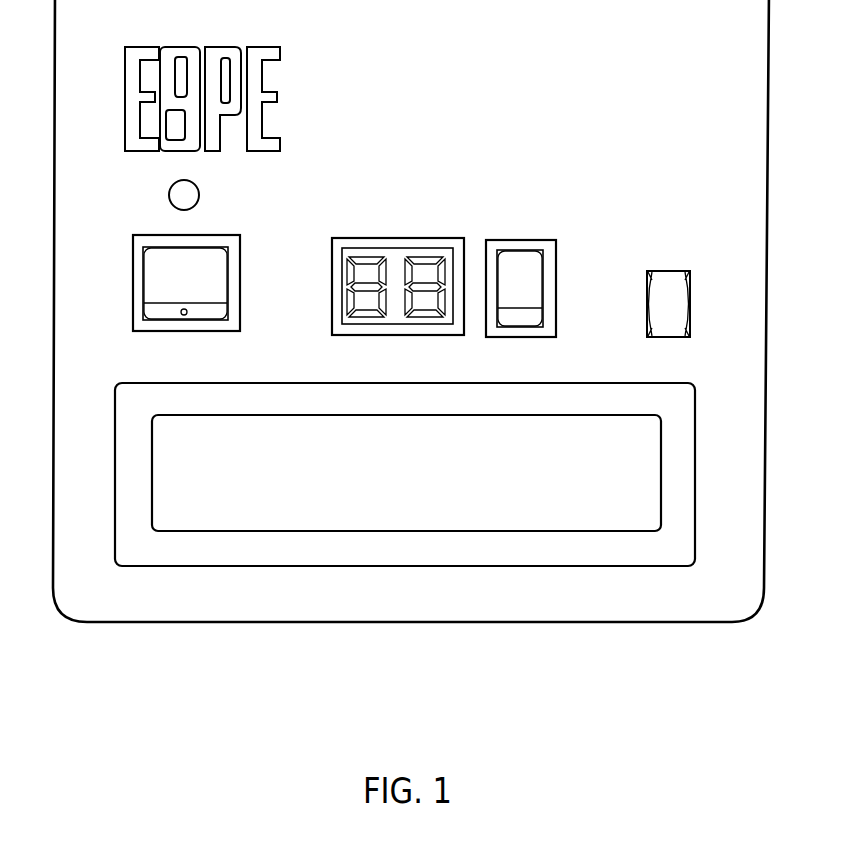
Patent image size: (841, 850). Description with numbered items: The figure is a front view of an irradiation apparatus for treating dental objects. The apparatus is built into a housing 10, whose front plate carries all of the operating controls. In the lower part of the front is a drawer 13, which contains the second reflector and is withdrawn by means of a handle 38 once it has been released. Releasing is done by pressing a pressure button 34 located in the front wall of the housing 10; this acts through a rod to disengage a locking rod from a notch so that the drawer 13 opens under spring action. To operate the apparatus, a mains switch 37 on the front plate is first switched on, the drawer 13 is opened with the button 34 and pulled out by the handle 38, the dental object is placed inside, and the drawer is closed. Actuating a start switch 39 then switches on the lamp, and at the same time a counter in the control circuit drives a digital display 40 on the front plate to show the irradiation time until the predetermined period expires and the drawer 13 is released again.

The housing 10 is at (258, 606).
The drawer 13 is at (549, 552).
The pressure button 34 is at (676, 307).
The mains switch 37 is at (170, 270).
The handle 38 is at (403, 513).
The start switch 39 is at (530, 278).
The digital display 40 is at (402, 260).